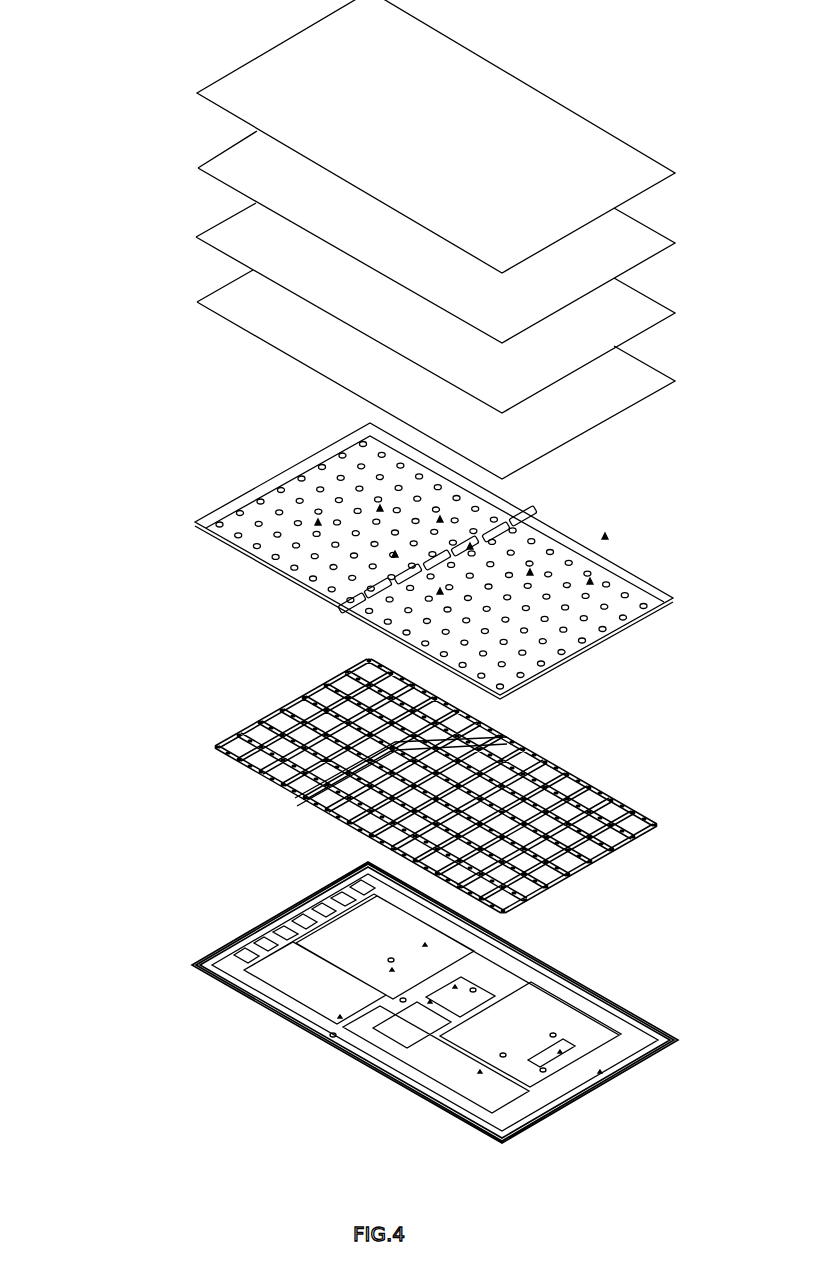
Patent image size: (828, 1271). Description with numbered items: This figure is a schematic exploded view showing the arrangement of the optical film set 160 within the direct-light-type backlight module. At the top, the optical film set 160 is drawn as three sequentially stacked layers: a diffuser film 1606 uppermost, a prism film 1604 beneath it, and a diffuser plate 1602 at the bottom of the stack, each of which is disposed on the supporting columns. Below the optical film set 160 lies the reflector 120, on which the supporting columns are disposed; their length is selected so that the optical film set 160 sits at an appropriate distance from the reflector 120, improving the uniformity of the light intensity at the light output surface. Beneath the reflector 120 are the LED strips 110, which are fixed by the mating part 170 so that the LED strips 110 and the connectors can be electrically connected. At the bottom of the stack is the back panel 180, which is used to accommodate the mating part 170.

The optical film set 160 is at (112, 78).
The diffuser film 1606 is at (200, 93).
The prism film 1604 is at (222, 230).
The diffuser plate 1602 is at (200, 300).
The reflector 120 is at (257, 512).
The LED strips 110 is at (297, 708).
The mating part 170 is at (327, 802).
The back panel 180 is at (307, 947).